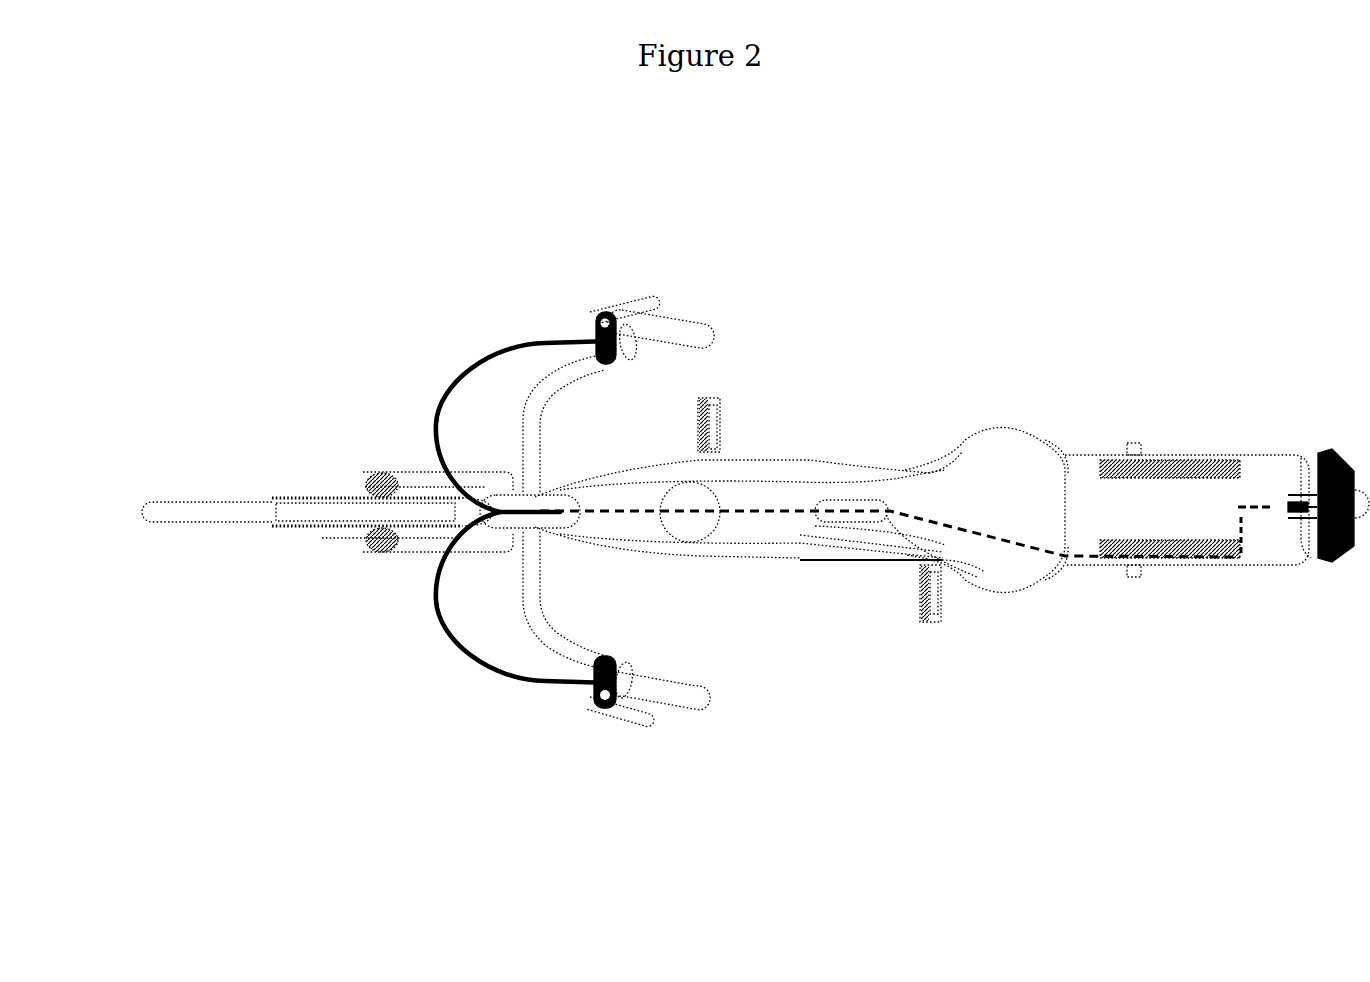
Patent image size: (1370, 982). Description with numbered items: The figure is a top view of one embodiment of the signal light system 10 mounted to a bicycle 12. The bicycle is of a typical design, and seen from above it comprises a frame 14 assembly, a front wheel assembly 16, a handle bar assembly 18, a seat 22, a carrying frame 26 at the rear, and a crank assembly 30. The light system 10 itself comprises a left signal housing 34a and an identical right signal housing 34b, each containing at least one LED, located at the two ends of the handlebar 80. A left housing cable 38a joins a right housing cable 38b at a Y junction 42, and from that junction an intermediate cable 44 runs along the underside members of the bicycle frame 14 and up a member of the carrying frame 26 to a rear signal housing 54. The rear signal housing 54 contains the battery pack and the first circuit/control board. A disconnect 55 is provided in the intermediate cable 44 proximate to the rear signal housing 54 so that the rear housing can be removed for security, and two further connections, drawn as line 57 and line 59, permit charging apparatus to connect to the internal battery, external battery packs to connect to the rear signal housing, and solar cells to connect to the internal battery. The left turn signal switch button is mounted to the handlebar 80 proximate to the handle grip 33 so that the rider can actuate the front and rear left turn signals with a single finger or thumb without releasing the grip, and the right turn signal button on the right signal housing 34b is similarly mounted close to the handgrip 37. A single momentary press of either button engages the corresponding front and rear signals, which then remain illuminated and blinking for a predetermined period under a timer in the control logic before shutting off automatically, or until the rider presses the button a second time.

The signal light system 10 is at (410, 328).
The bicycle 12 is at (233, 478).
The frame 14 is at (768, 558).
The front wheel assembly 16 is at (259, 515).
The handle bar assembly 18 is at (556, 576).
The seat 22 is at (997, 450).
The carrying frame 26 is at (1102, 455).
The crank assembly 30 is at (750, 445).
The handle grip 33 is at (694, 698).
The left signal housing 34a is at (603, 705).
The right signal housing 34b is at (611, 325).
The handgrip 37 is at (683, 328).
The left housing cable 38a is at (499, 687).
The right housing cable 38b is at (500, 342).
The Y junction 42 is at (563, 495).
The intermediate cable 44 is at (772, 510).
The rear signal housing 54 is at (1342, 450).
The disconnect 55 is at (1285, 512).
The line 57 is at (1306, 490).
The line 59 is at (1298, 527).
The handlebar 80 is at (625, 355).